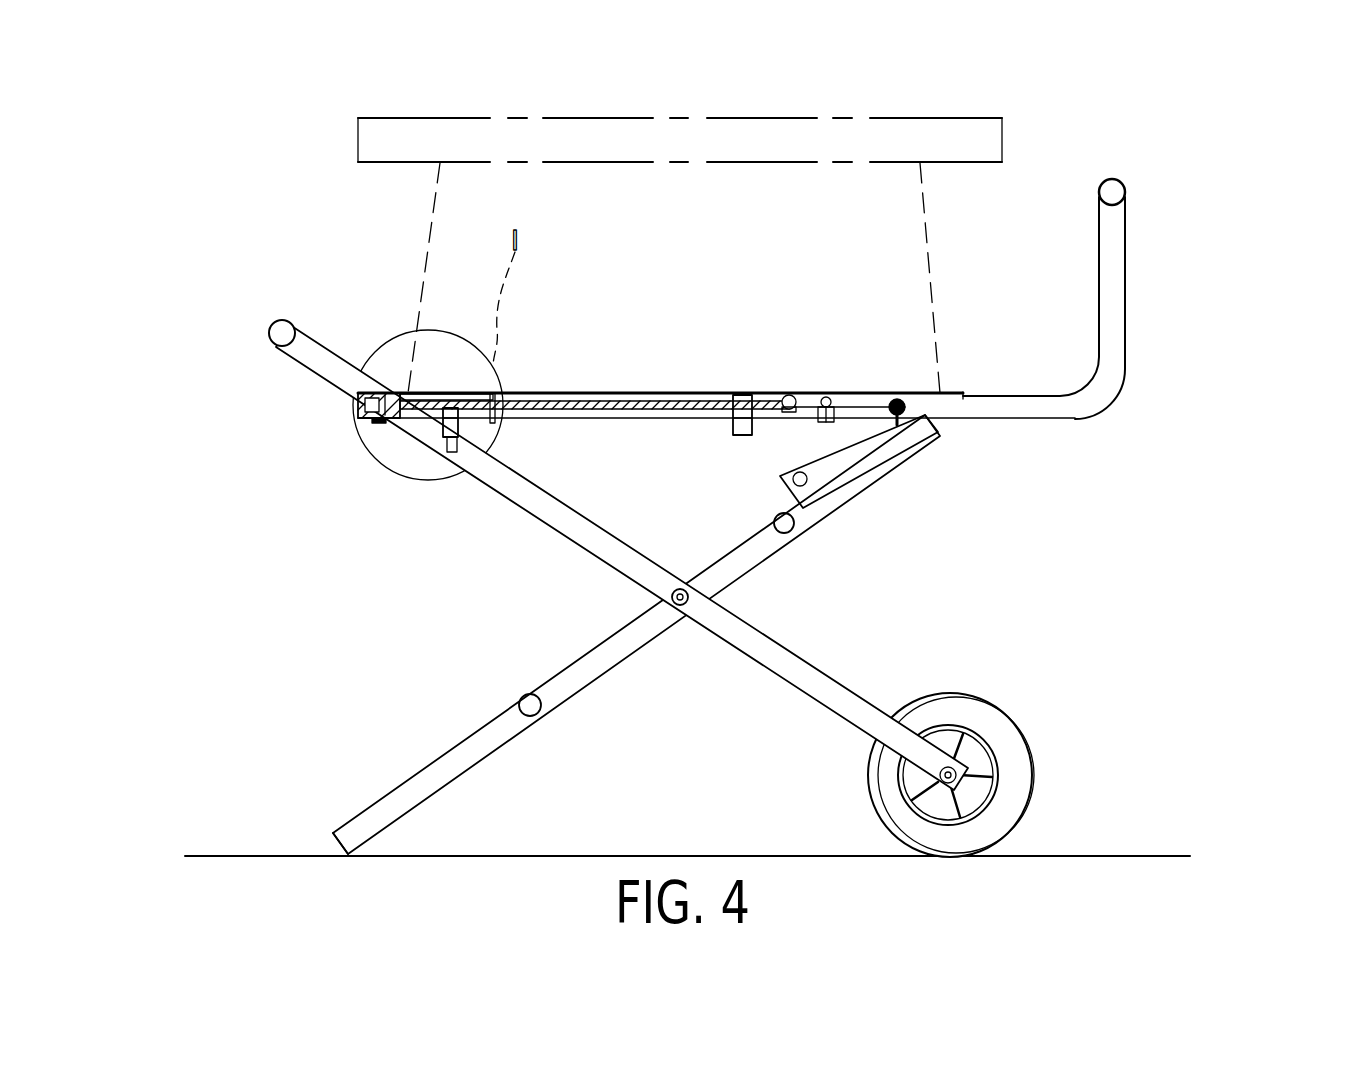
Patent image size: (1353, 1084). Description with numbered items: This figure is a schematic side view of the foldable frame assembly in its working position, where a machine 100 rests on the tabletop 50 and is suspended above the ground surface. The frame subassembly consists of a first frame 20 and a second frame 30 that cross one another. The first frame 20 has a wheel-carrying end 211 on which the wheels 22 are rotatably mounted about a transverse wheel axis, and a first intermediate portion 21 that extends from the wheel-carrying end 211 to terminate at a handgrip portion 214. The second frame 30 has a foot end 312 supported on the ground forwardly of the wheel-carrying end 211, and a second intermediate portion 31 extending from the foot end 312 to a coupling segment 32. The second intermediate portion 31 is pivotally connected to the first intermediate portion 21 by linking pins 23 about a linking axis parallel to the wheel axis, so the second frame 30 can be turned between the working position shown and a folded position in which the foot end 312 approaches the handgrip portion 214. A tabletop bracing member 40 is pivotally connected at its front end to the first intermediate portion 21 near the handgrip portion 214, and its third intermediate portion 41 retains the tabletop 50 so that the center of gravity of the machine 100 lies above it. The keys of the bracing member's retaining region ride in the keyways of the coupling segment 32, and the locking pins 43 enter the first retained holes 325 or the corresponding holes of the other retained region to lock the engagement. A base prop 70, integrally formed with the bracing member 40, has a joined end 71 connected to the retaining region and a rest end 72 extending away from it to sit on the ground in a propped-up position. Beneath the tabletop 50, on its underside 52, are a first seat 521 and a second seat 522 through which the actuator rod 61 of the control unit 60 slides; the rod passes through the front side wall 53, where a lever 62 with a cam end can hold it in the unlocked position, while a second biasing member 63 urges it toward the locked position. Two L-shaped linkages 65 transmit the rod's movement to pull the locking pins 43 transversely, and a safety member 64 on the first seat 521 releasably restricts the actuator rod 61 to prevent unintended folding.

The machine 100 is at (915, 117).
The first frame 20 is at (583, 553).
The first intermediate portion 21 is at (760, 670).
The wheel-carrying end 211 is at (960, 775).
The handgrip portion 214 is at (275, 326).
The wheels 22 is at (1020, 723).
The linking pins 23 is at (680, 610).
The second frame 30 is at (822, 510).
The second intermediate portion 31 is at (565, 688).
The foot end 312 is at (345, 830).
The coupling segment 32 is at (862, 455).
The first retained holes 325 is at (795, 535).
The tabletop bracing member 40 is at (1020, 392).
The third intermediate portion 41 is at (796, 396).
The locking pins 43 is at (906, 415).
The tabletop 50 is at (930, 384).
The underside 52 is at (650, 400).
The first seat 521 is at (443, 428).
The second seat 522 is at (735, 435).
The front side wall 53 is at (392, 418).
The control unit 60 is at (355, 413).
The actuator rod 61 is at (586, 392).
The lever 62 is at (362, 402).
The second biasing member 63 is at (458, 440).
The safety member 64 is at (450, 452).
The L-shaped linkages 65 is at (834, 400).
The base prop 70 is at (1132, 235).
The joined end 71 is at (1100, 390).
The rest end 72 is at (1128, 182).